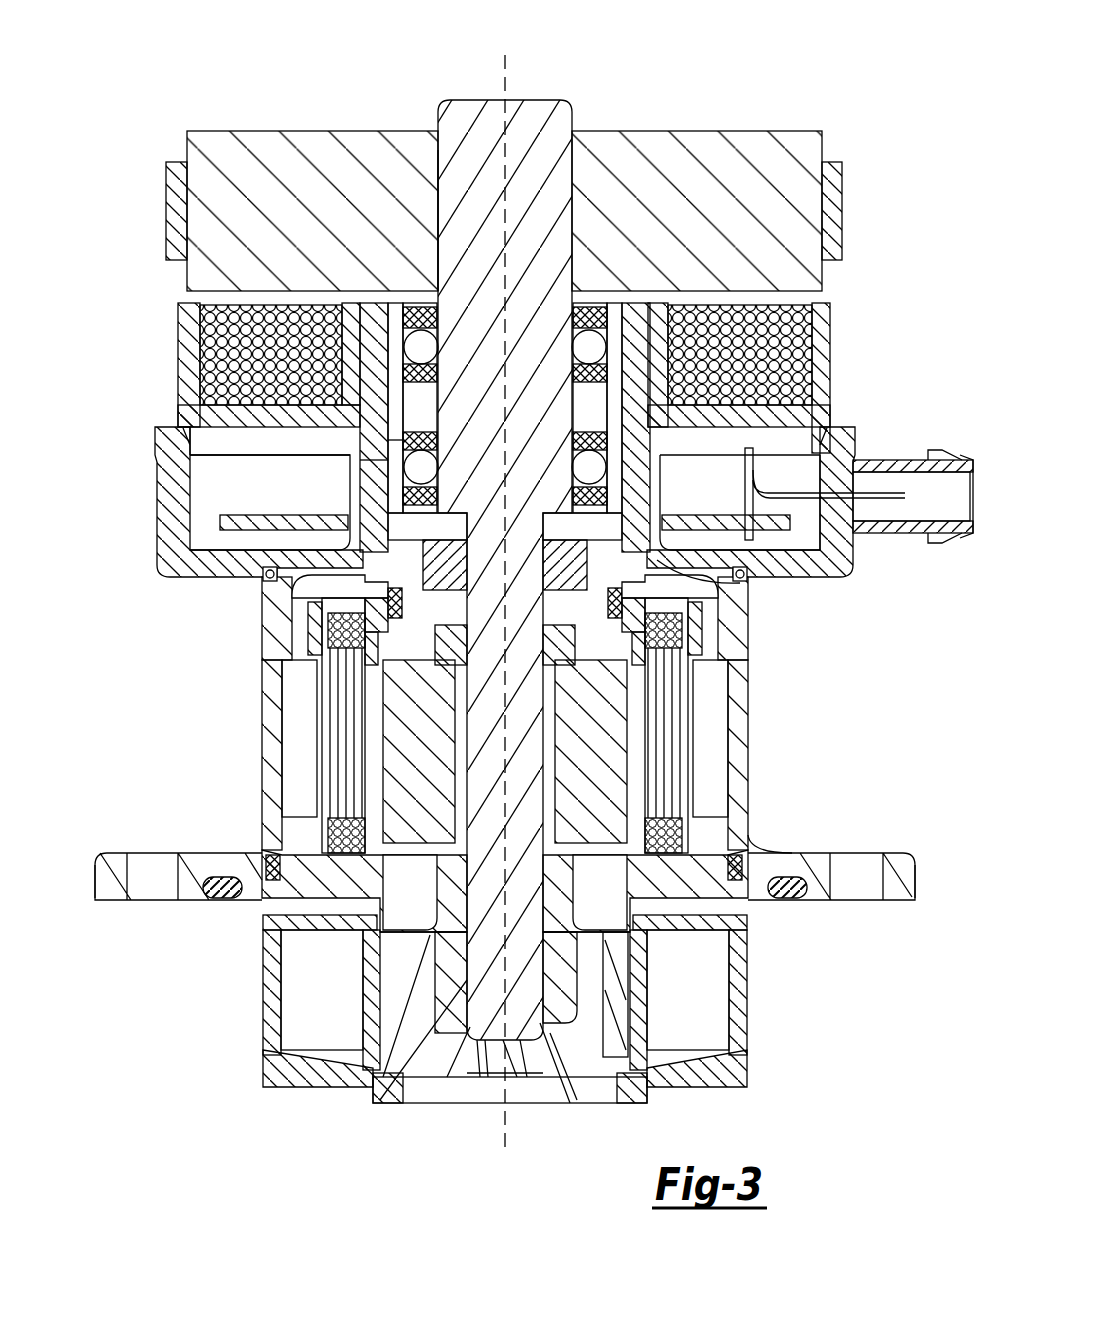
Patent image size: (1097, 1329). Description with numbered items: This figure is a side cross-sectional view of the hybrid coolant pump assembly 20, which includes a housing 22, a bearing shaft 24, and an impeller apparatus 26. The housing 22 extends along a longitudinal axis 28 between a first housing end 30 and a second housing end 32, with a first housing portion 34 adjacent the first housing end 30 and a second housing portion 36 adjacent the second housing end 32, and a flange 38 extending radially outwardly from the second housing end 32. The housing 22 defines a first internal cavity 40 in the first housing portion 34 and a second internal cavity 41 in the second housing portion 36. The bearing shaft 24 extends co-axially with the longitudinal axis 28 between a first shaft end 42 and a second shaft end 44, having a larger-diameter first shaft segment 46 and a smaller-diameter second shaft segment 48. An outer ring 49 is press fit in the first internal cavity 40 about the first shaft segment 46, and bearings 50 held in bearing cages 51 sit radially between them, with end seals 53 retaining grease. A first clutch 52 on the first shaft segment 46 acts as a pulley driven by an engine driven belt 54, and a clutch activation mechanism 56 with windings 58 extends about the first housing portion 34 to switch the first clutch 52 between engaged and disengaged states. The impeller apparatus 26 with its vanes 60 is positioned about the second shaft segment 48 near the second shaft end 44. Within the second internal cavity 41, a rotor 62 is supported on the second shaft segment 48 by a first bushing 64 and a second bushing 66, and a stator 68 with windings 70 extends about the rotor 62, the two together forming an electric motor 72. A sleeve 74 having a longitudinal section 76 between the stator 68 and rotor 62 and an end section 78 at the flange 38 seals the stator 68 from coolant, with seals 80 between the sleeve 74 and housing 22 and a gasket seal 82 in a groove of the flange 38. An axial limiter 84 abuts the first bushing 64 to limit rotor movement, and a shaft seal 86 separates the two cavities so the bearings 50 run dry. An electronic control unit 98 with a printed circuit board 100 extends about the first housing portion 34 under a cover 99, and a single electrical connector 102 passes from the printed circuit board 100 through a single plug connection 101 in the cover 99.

The hybrid coolant pump assembly 20 is at (244, 86).
The housing 22 is at (760, 620).
The bearing shaft 24 is at (570, 520).
The impeller apparatus 26 is at (262, 1093).
The longitudinal axis 28 is at (505, 75).
The first housing end 30 is at (637, 298).
The second housing end 32 is at (190, 900).
The first housing portion 34 is at (360, 468).
The second housing portion 36 is at (275, 742).
The flange 38 is at (100, 897).
The first internal cavity 40 is at (410, 520).
The second internal cavity 41 is at (400, 875).
The first shaft end 42 is at (548, 100).
The second shaft end 44 is at (470, 1043).
The first shaft segment 46 is at (453, 193).
The second shaft segment 48 is at (478, 1005).
The outer ring 49 is at (390, 450).
The bearings 50 is at (592, 347).
The bearing cages 51 is at (420, 322).
The first clutch 52 is at (300, 150).
The end seals 53 is at (587, 316).
The engine driven belt 54 is at (835, 175).
The clutch activation mechanism 56 is at (172, 377).
The windings 58 is at (778, 360).
The vanes 60 is at (672, 992).
The rotor 62 is at (405, 720).
The first bushing 64 is at (555, 685).
The second bushing 66 is at (548, 912).
The stator 68 is at (700, 755).
The windings 70 is at (668, 838).
The electric motor 72 is at (805, 650).
The sleeve 74 is at (303, 900).
The longitudinal section 76 is at (372, 758).
The end section 78 is at (262, 840).
The seals 80 is at (268, 578).
The gasket seal 82 is at (215, 880).
The axial limiter 84 is at (440, 640).
The shaft seal 86 is at (720, 575).
The electronic control unit 98 is at (228, 517).
The cover 99 is at (843, 440).
The printed circuit board 100 is at (220, 530).
The single plug connection 101 is at (950, 535).
The single electrical connector 102 is at (762, 473).